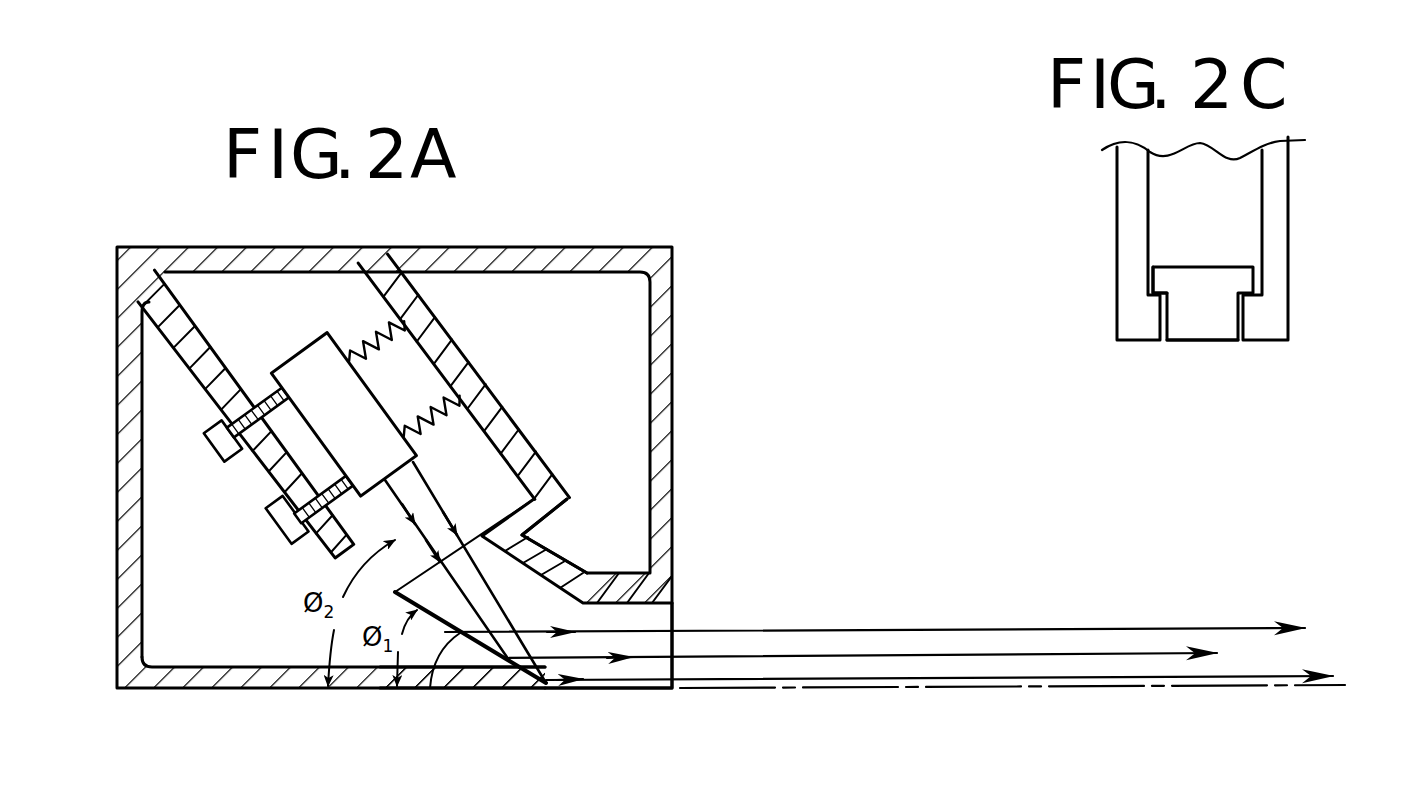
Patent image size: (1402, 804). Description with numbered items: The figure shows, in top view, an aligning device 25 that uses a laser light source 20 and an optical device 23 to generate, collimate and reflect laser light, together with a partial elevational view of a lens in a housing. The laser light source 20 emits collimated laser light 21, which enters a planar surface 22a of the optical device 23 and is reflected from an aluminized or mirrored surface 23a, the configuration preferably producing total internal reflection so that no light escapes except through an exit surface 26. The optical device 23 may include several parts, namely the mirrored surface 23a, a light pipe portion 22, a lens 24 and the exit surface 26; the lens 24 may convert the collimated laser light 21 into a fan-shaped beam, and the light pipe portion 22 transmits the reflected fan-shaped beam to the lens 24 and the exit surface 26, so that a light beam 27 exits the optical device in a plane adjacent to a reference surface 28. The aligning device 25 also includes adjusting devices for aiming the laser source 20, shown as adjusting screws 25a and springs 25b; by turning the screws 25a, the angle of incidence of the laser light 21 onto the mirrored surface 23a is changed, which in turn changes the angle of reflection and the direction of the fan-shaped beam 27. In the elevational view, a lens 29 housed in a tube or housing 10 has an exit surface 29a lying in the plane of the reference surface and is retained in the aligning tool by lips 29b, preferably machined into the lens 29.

In FIG. 2C, the housing tube 10 is at (1288, 210).
In FIG. 2A, the laser light source 20 is at (314, 346).
In FIG. 2A, the collimated laser light 21 is at (437, 502).
In FIG. 2A, the light pipe portion 22 is at (612, 603).
In FIG. 2A, the planar surface 22a is at (404, 590).
In FIG. 2A, the optical device 23 is at (430, 688).
In FIG. 2A, the mirrored surface 23a is at (505, 664).
In FIG. 2A, the lens 24 is at (617, 688).
In FIG. 2A, the aligning device 25 is at (624, 249).
In FIG. 2A, the adjusting screws 25a is at (293, 546).
In FIG. 2A, the springs 25b is at (468, 362).
In FIG. 2A, the exit surface 26 is at (676, 679).
In FIG. 2A, the light beam 27 is at (1056, 628).
In FIG. 2A, the reference surface 28 is at (888, 688).
In FIG. 2C, the lens 29 is at (1205, 267).
In FIG. 2C, the exit surface 29a is at (1225, 340).
In FIG. 2C, the lips 29b is at (1150, 278).